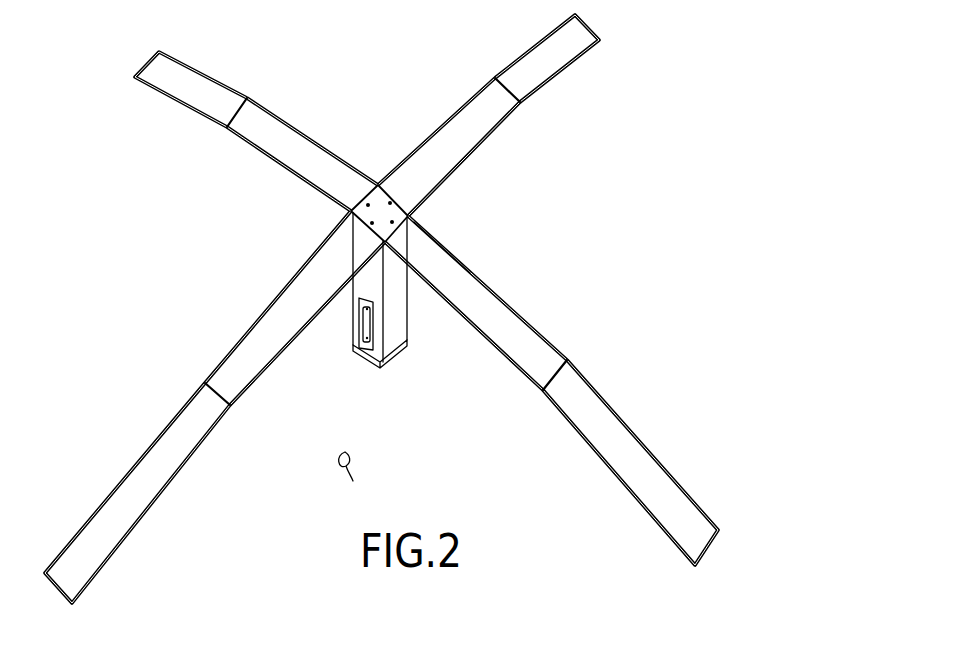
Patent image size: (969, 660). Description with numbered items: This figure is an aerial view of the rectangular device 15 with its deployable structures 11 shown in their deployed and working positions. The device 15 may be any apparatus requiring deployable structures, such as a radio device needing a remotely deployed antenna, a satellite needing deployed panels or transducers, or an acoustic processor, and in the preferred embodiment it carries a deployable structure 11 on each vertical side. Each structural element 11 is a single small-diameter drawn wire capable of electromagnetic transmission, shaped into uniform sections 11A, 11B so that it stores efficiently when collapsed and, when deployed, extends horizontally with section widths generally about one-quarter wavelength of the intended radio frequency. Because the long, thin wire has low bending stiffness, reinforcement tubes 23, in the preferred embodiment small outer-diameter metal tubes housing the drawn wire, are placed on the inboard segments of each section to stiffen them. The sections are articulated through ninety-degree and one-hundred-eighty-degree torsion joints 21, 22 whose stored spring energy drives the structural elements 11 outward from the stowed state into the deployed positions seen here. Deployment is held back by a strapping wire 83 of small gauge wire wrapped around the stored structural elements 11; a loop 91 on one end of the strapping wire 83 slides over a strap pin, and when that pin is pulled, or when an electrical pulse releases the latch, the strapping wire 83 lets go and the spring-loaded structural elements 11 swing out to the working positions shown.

The deployable structure 11 is at (385, 309).
The uniform section 11A is at (291, 173).
The uniform section 11B is at (562, 70).
The rectangular device 15 is at (397, 317).
The torsion joint 21 is at (232, 112).
The torsion joint 22 is at (404, 204).
The reinforcement tube 23 is at (472, 272).
The strapping wire 83 is at (365, 346).
The loop 91 is at (358, 472).